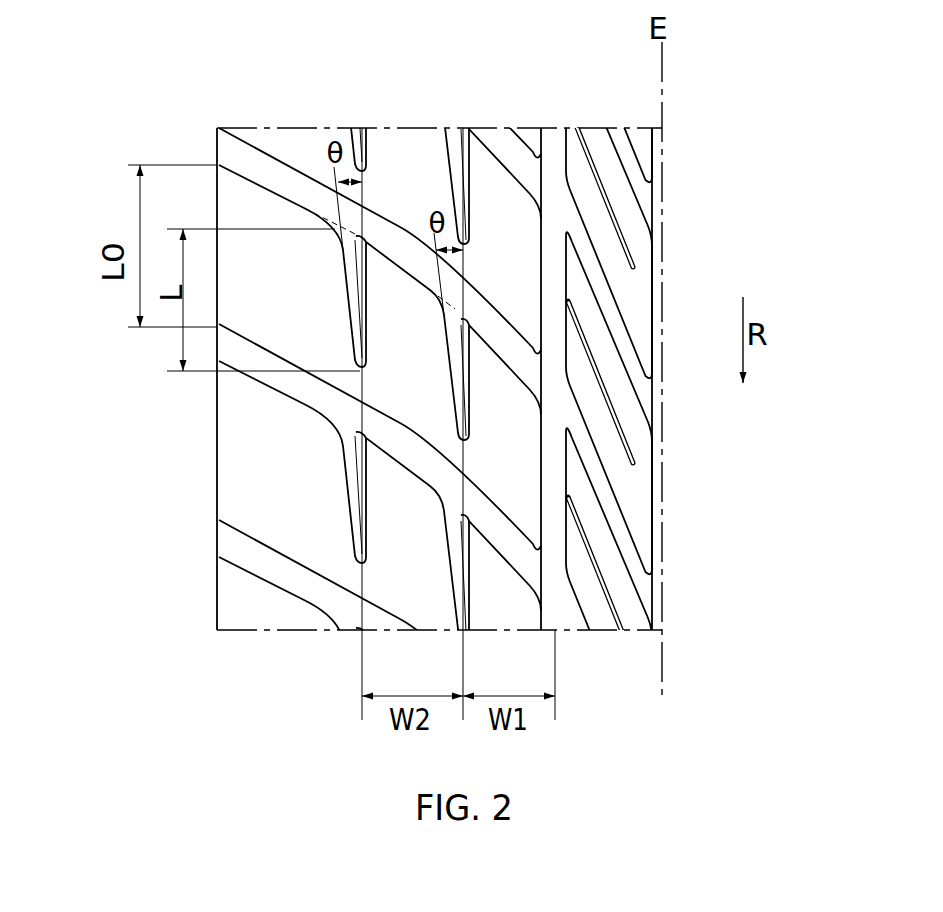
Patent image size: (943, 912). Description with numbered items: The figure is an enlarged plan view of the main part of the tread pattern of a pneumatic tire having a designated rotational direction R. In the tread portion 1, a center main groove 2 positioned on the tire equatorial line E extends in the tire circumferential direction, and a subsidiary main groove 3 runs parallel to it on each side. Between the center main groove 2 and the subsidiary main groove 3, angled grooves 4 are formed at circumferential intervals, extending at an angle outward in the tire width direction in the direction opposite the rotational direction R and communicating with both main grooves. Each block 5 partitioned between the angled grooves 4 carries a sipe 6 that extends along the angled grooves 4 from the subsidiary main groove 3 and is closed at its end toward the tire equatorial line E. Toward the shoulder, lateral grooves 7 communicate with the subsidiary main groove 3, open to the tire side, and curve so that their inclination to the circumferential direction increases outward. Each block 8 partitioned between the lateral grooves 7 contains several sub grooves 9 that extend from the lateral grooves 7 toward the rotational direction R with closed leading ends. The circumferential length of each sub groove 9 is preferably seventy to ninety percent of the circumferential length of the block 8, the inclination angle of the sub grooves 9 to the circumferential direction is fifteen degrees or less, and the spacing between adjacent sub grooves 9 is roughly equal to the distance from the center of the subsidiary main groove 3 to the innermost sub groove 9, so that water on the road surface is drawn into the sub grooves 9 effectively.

The tread portion 1 is at (246, 126).
The center main groove 2 is at (658, 126).
The subsidiary main groove 3 is at (555, 127).
The angled groove 4 is at (620, 323).
The block 5 is at (637, 510).
The sipe 6 is at (628, 443).
The lateral groove 7 is at (401, 220).
The block 8 is at (284, 206).
The sub groove 9 is at (346, 310).